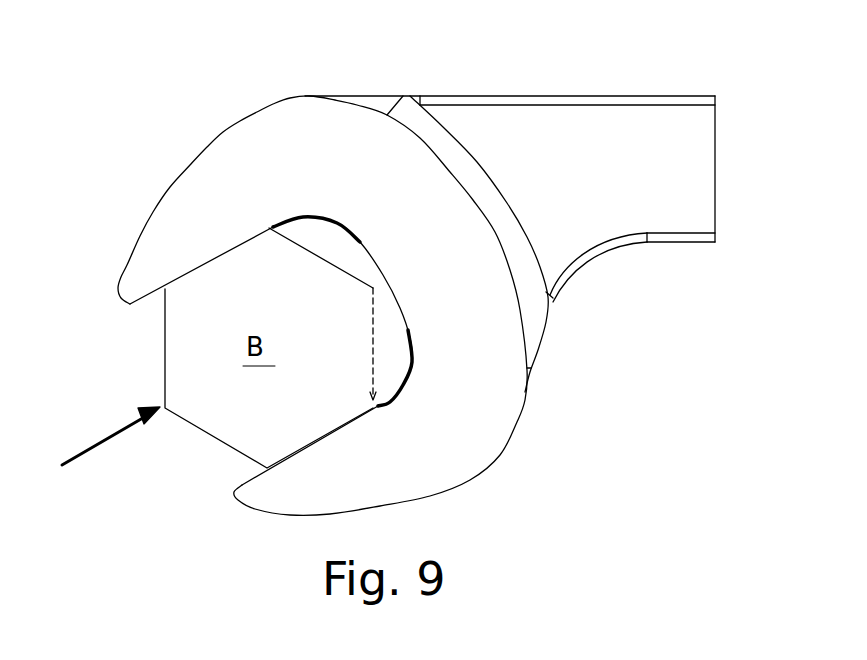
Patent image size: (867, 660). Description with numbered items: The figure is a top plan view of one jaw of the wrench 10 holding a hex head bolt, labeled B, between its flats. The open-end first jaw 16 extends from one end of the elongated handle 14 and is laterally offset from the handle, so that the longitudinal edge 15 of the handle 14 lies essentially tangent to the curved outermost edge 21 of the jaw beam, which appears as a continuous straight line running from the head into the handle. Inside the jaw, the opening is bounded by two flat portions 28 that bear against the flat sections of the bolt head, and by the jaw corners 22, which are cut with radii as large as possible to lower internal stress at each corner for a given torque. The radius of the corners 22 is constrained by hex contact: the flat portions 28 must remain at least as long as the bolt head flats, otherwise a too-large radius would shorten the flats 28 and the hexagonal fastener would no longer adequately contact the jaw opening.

The wrench 10 is at (394, 74).
The handle 14 is at (680, 183).
The longitudinal edge 15 is at (580, 96).
The first jaw 16 is at (453, 260).
The curved outermost edge 21 is at (252, 107).
The jaw corner 22 is at (316, 220).
The flat portion 28 is at (197, 266).